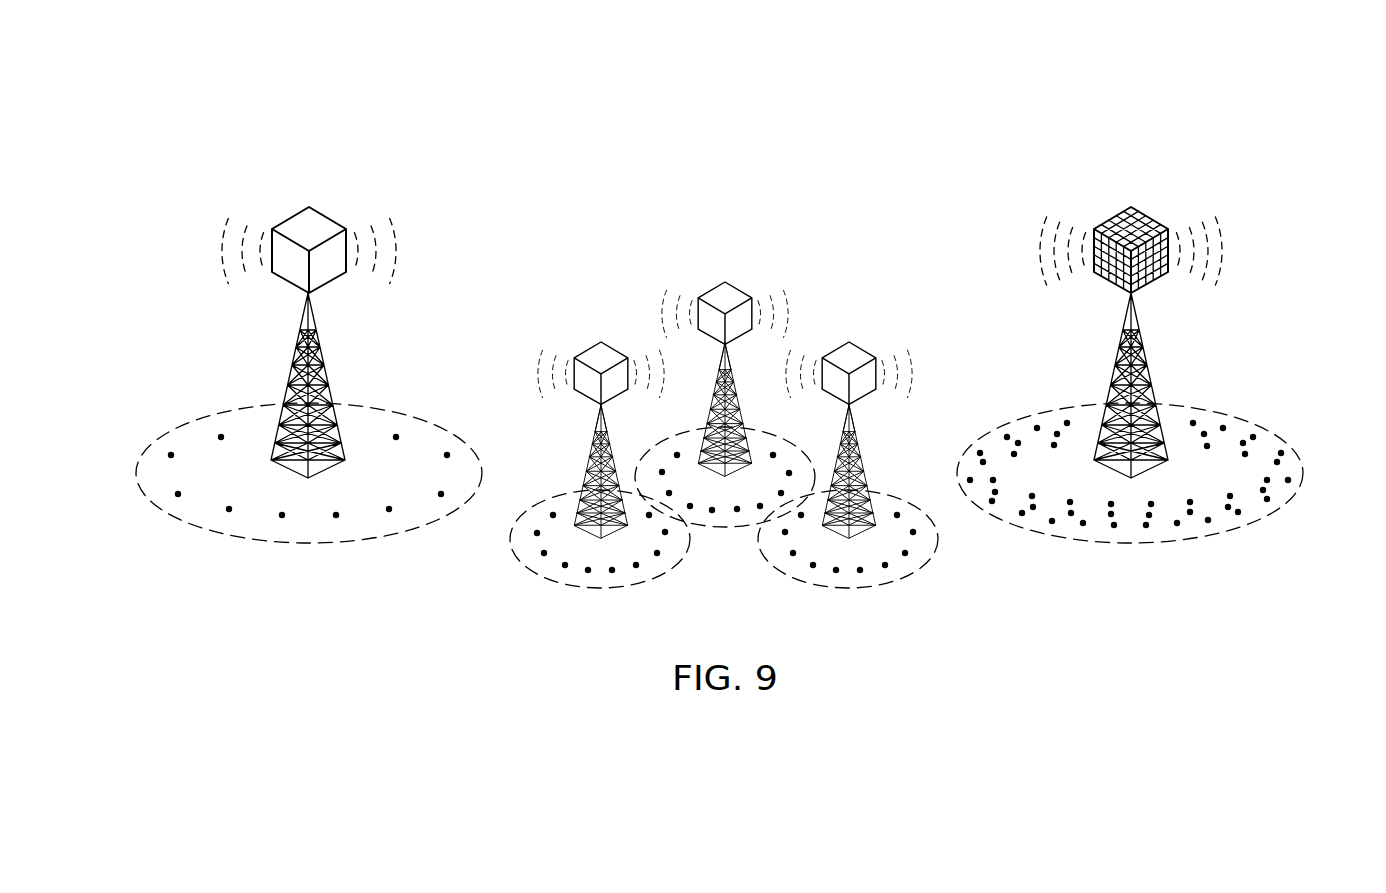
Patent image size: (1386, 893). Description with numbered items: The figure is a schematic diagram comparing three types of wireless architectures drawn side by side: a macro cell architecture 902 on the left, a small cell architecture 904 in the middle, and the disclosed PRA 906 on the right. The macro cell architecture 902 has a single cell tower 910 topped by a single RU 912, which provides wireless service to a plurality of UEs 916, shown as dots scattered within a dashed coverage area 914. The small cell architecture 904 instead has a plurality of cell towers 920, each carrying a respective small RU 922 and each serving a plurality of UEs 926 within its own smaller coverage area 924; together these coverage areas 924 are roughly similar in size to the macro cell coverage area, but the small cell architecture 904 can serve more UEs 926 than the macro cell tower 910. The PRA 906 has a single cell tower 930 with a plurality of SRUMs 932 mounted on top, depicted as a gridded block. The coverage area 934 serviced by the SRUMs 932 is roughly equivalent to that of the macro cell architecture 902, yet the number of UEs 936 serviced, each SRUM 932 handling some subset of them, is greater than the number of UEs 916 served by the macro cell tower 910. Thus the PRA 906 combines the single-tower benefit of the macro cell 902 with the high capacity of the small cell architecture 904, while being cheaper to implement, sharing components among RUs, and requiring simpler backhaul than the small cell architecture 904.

The macro cell architecture 902 is at (210, 201).
The small cell architecture 904 is at (812, 268).
The PRA 906 is at (1190, 178).
The cell tower 910 is at (292, 372).
The RU 912 is at (330, 216).
The coverage area 914 is at (138, 467).
The UEs 916 is at (224, 517).
The cell towers 920 is at (585, 460).
The small RU 922 is at (590, 351).
The coverage area 924 is at (565, 585).
The UEs 926 is at (553, 513).
The cell tower 930 is at (1152, 380).
The SRUMs 932 is at (1118, 213).
The coverage area 934 is at (1303, 470).
The UEs 936 is at (1230, 510).